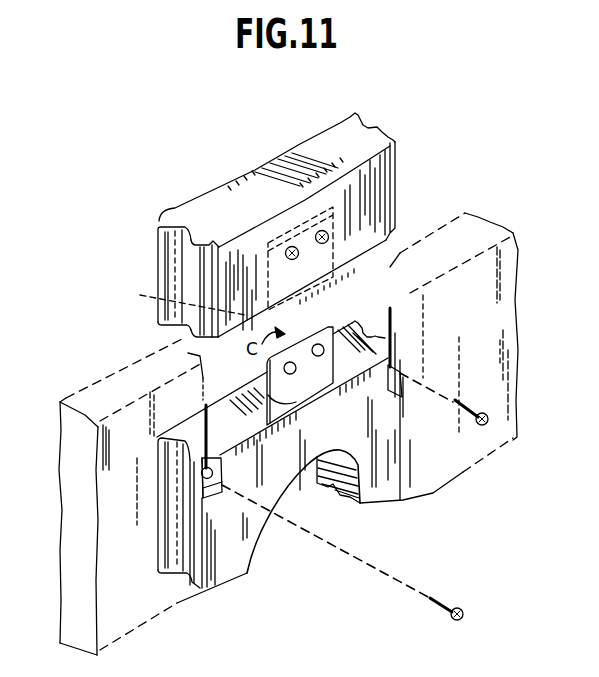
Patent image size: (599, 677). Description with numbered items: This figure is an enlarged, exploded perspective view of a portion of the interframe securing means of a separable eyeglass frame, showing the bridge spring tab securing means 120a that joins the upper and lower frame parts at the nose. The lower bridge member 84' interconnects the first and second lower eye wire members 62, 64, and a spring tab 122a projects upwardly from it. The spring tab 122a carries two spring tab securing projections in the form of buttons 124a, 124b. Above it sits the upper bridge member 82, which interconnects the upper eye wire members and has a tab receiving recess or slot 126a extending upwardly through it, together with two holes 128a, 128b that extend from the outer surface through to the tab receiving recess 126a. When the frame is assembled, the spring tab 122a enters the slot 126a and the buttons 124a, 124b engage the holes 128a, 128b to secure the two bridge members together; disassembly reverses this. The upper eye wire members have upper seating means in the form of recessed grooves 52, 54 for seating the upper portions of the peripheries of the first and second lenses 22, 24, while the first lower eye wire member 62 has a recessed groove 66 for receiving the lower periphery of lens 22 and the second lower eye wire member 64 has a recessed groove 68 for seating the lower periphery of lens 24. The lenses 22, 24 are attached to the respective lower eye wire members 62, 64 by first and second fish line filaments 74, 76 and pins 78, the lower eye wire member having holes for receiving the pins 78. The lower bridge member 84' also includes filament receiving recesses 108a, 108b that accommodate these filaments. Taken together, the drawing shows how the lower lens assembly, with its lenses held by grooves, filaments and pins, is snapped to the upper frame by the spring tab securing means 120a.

The first lens 22 is at (465, 250).
The second lens 24 is at (95, 465).
The recessed groove 52 is at (369, 126).
The recessed groove 54 is at (173, 255).
The first lower eye wire member 62 is at (372, 468).
The second lower eye wire member 64 is at (223, 552).
The recessed groove 66 is at (365, 333).
The recessed groove 68 is at (203, 489).
The first fish line filament 74 is at (393, 337).
The second fish line filament 76 is at (204, 440).
The pin 78 is at (475, 405).
The upper bridge member 82 is at (286, 163).
The lower bridge member 84' is at (321, 494).
The filament receiving recess 108a is at (400, 373).
The filament receiving recess 108b is at (203, 496).
The bridge spring tab securing means 120a is at (152, 339).
The spring tab 122a is at (267, 390).
The button 124a is at (318, 346).
The button 124b is at (292, 377).
The tab receiving recess 126a is at (141, 296).
The hole 128a is at (323, 234).
The hole 128b is at (289, 258).